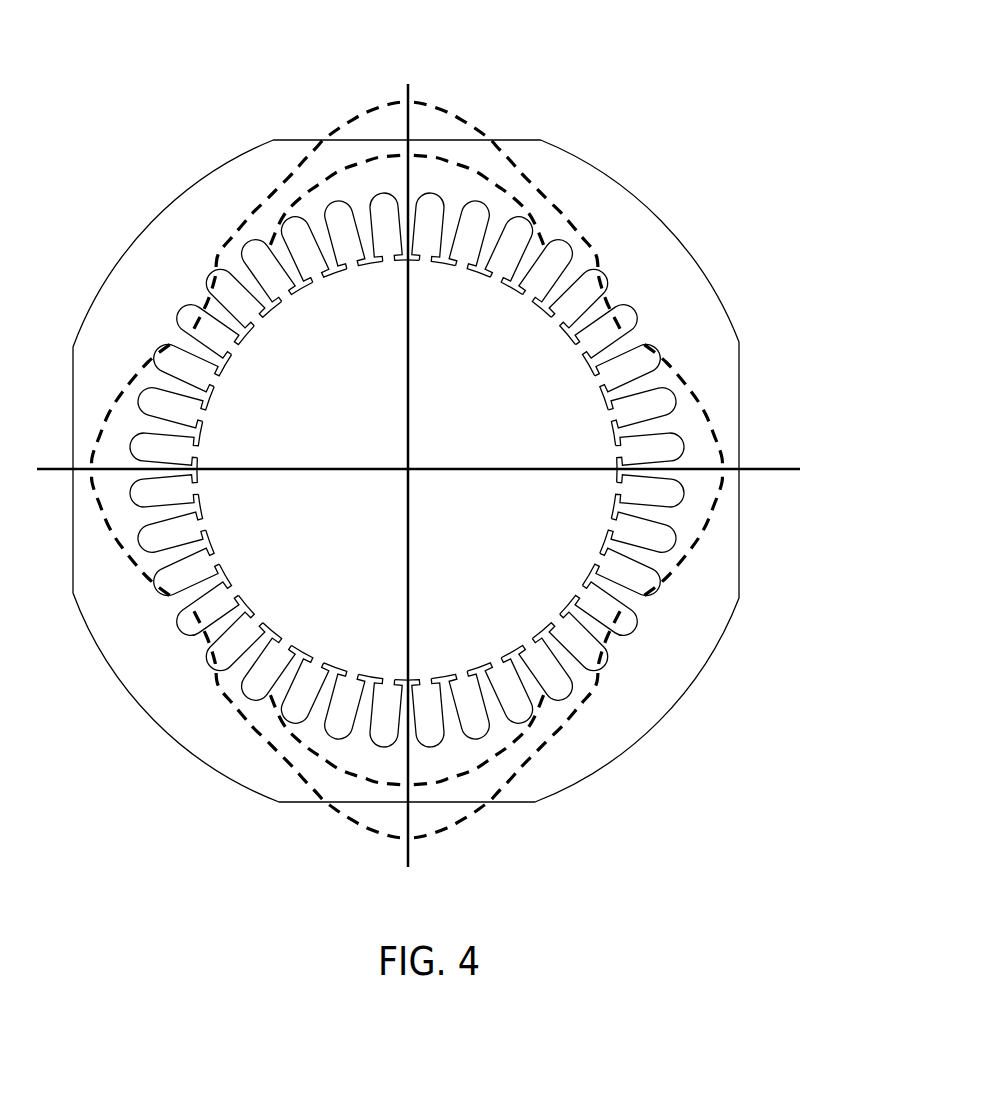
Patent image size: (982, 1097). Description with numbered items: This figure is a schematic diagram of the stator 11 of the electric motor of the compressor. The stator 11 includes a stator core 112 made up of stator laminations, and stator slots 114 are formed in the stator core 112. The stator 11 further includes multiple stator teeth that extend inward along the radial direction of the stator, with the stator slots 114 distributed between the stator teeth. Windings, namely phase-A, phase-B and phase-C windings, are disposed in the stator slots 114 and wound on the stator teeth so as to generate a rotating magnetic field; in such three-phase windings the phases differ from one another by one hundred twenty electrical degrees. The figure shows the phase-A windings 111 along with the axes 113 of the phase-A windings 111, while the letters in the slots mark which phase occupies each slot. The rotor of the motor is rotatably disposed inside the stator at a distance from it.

The stator 11 is at (634, 120).
The phase-A windings 111 is at (464, 122).
The stator core 112 is at (688, 283).
The axes of the phase-A windings 113 is at (763, 471).
The stator slots 114 is at (665, 397).